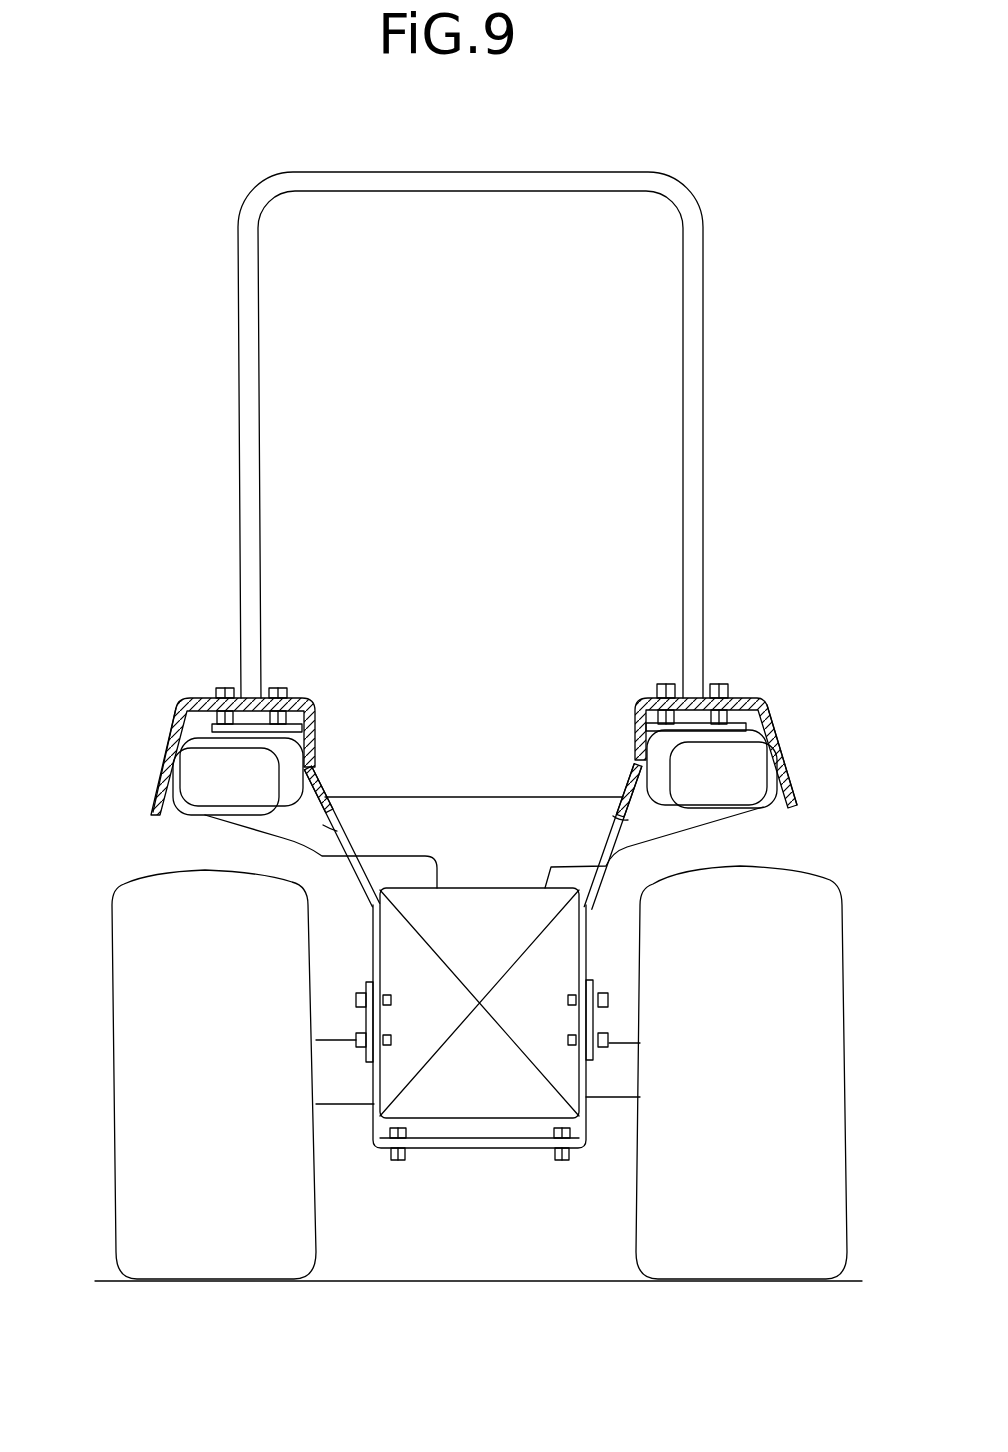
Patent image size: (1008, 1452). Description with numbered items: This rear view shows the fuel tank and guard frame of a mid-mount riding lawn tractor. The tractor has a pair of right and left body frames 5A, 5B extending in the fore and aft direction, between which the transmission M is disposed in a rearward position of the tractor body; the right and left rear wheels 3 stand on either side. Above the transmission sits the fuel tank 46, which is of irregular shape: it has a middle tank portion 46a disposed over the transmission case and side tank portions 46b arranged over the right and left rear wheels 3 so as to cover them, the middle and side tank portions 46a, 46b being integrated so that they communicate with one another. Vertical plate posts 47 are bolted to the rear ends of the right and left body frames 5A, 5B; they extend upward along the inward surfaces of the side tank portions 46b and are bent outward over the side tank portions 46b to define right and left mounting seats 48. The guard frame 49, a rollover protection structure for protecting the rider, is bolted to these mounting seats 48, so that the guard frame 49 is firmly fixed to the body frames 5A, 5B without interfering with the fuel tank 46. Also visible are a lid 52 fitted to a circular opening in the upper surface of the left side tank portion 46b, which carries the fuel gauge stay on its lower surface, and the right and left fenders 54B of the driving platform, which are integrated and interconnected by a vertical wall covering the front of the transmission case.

The rear wheels 3 is at (119, 1042).
The body frame 5A is at (357, 1017).
The body frame 5B is at (598, 1013).
The fuel tank 46 is at (419, 797).
The middle tank portion 46a is at (467, 810).
The side tank portions 46b is at (203, 800).
The vertical plate posts 47 is at (348, 875).
The mounting seats 48 is at (251, 728).
The guard frame 49 is at (238, 387).
The lid 52 is at (212, 725).
The fenders 54B is at (197, 700).
The transmission M is at (473, 1118).